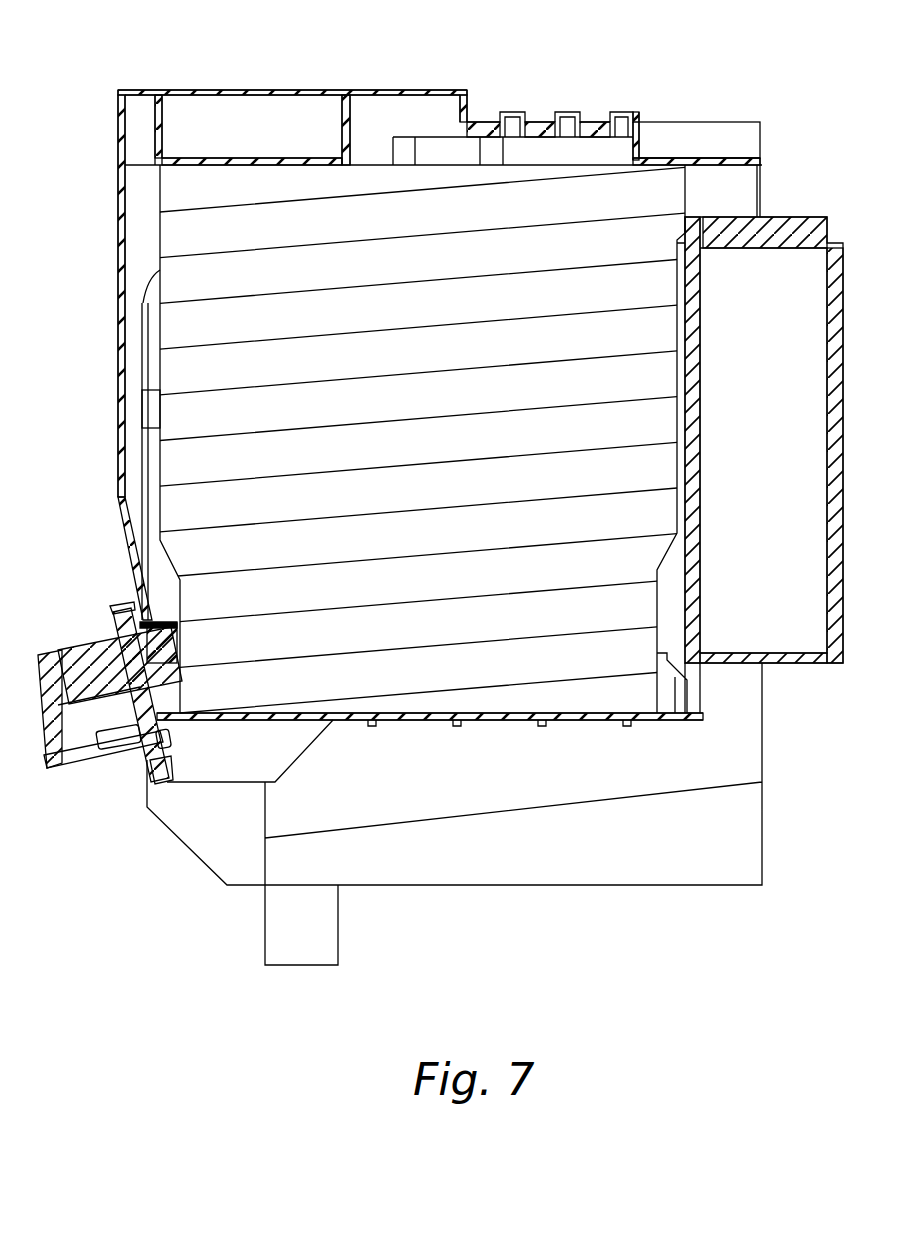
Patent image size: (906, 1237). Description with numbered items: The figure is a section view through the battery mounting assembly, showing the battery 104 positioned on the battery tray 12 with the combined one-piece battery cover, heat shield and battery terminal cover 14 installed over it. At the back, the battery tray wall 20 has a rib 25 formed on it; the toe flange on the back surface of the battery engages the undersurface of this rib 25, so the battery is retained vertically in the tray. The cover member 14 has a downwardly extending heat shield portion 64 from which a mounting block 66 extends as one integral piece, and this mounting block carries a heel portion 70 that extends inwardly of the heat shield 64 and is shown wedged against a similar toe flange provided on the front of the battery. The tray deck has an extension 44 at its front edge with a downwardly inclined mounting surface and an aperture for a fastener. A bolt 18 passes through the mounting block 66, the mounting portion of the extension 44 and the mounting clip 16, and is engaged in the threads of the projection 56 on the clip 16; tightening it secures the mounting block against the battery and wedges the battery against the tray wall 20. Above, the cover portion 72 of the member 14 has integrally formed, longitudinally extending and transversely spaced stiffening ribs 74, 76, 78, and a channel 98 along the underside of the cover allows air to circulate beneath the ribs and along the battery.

The battery tray 12 is at (588, 750).
The combined one-piece battery cover, heat shield and battery terminal cover 14 is at (270, 68).
The mounting clip 16 is at (90, 748).
The bolt 18 is at (112, 614).
The battery tray wall 20 is at (685, 602).
The rib 25 is at (654, 692).
The extension 44 is at (60, 786).
The projection 56 is at (143, 760).
The heat shield portion 64 is at (118, 214).
The mounting block 66 is at (80, 654).
The heel portion 70 is at (180, 642).
The cover portion 72 is at (703, 122).
The stiffening rib 74 is at (506, 112).
The stiffening rib 76 is at (563, 112).
The stiffening rib 78 is at (630, 112).
The channel 98 is at (384, 108).
The battery 104 is at (200, 360).